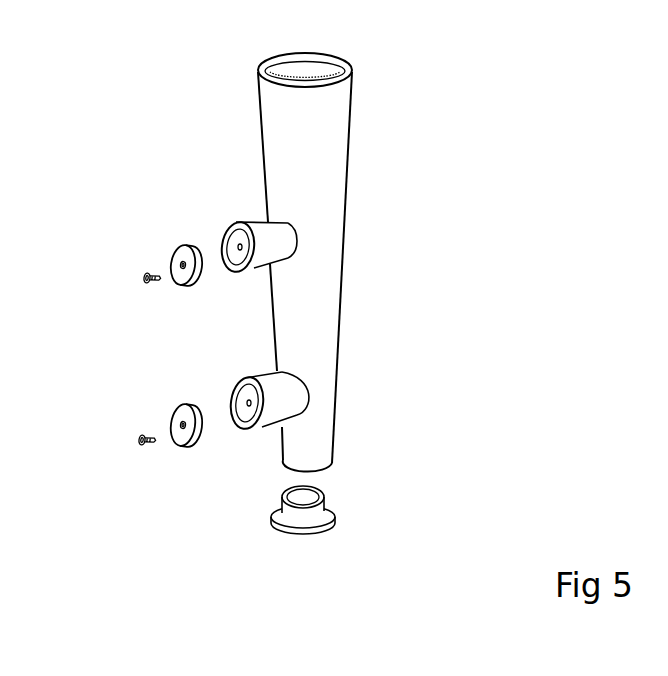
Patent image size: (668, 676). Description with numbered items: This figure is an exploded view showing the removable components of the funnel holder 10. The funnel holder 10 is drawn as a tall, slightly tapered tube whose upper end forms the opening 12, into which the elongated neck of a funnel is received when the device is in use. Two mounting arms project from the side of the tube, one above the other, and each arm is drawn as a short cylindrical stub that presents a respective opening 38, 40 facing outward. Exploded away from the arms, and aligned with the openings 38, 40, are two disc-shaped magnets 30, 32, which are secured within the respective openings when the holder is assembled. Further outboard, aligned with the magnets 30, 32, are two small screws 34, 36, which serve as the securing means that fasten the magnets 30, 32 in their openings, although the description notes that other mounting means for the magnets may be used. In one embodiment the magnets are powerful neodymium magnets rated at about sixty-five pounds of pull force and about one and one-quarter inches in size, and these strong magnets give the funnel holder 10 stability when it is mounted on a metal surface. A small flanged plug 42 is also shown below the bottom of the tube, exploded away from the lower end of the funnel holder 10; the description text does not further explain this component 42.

The funnel holder 10 is at (357, 230).
The opening 12 is at (350, 65).
The magnet 30 is at (182, 242).
The magnet 32 is at (193, 463).
The screw 34 is at (145, 270).
The screw 36 is at (132, 447).
The opening 38 is at (250, 288).
The opening 40 is at (252, 448).
The bottom plug 42 is at (288, 555).